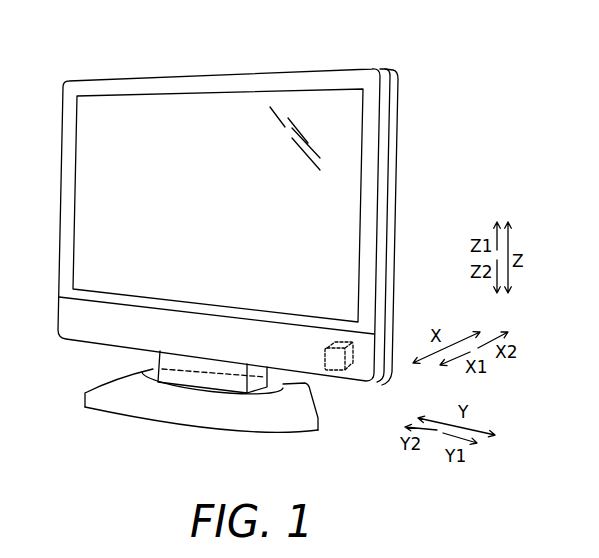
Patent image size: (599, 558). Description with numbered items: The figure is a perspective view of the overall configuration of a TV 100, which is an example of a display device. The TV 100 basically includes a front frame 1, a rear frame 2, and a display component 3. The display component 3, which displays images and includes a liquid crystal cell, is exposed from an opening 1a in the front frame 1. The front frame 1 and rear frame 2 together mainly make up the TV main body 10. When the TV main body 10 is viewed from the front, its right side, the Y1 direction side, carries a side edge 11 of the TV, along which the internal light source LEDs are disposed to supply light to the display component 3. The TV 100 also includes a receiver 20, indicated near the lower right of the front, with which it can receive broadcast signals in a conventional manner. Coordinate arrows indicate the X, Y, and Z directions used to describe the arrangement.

The TV 100 is at (222, 57).
The front frame 1 is at (348, 78).
The opening 1a is at (124, 296).
The rear frame 2 is at (397, 88).
The display component 3 is at (107, 114).
The TV main body 10 is at (63, 94).
The side edge 11 is at (388, 197).
The receiver 20 is at (337, 371).